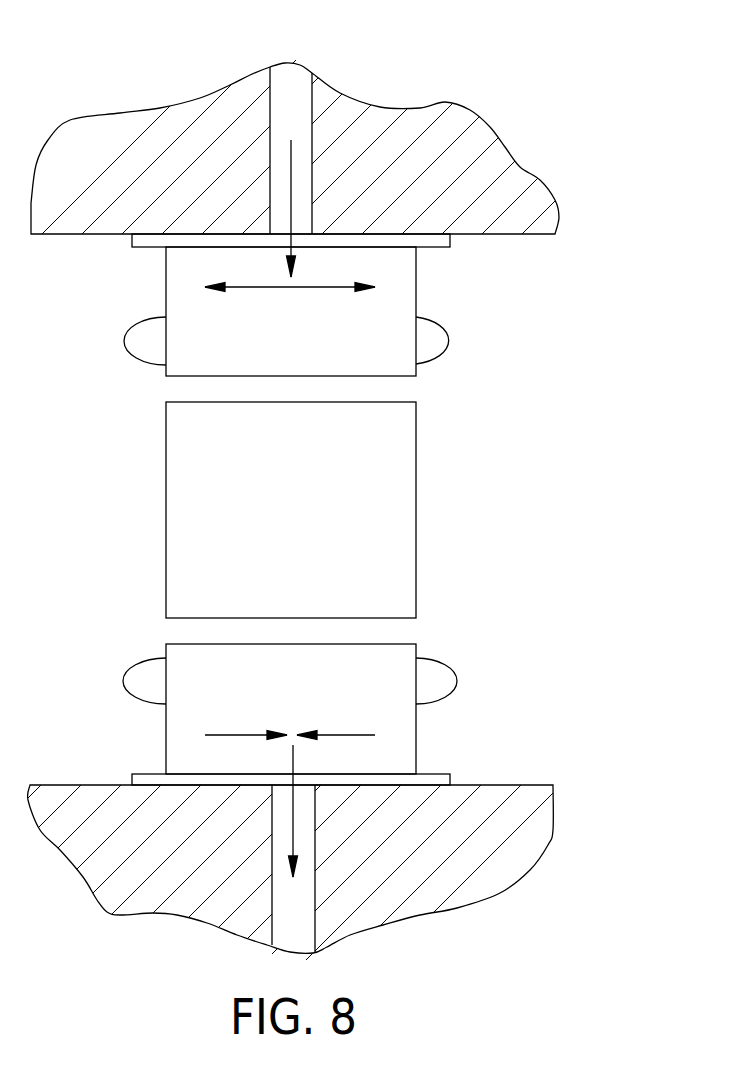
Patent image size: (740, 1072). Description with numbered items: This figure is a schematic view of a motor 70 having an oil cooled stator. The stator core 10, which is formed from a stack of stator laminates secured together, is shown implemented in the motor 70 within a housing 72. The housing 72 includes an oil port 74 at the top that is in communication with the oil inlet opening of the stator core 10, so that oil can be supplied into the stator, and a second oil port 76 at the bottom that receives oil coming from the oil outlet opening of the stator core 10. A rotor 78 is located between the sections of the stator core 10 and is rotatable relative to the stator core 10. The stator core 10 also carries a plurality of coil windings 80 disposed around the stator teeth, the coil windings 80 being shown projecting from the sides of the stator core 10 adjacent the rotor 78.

The stator core 10 is at (416, 283).
The motor 70 is at (606, 156).
The housing 72 is at (170, 133).
The oil port 74 is at (312, 127).
The oil port 76 is at (272, 883).
The rotor 78 is at (166, 511).
The coil windings 80 is at (124, 340).